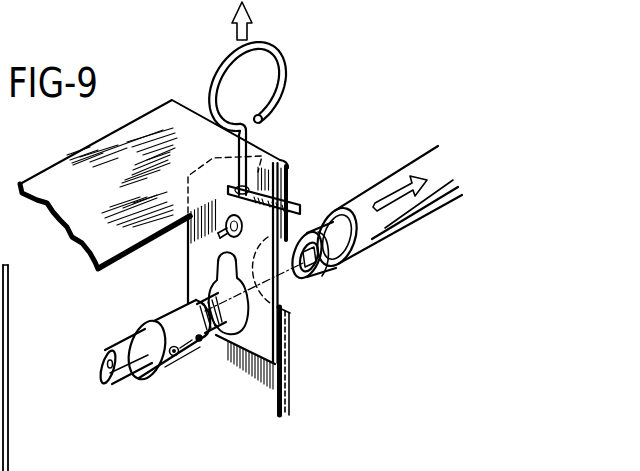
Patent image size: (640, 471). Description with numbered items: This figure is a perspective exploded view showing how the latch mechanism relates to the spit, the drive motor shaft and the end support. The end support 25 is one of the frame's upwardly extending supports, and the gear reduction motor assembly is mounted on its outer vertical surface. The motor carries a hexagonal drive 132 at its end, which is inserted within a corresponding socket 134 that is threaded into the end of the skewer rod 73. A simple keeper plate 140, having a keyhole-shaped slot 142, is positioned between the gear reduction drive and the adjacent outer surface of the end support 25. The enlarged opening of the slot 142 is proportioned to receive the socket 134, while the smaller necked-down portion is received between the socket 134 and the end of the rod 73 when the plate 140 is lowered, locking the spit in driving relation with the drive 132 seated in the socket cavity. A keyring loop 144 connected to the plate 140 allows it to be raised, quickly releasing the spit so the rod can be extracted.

The end support 25 is at (305, 394).
The skewer rod 73 is at (382, 235).
The hexagonal drive 132 is at (207, 334).
The socket 134 is at (307, 257).
The keeper plate 140 is at (184, 267).
The keyhole-shaped slot 142 is at (237, 335).
The keyring loop 144 is at (283, 70).